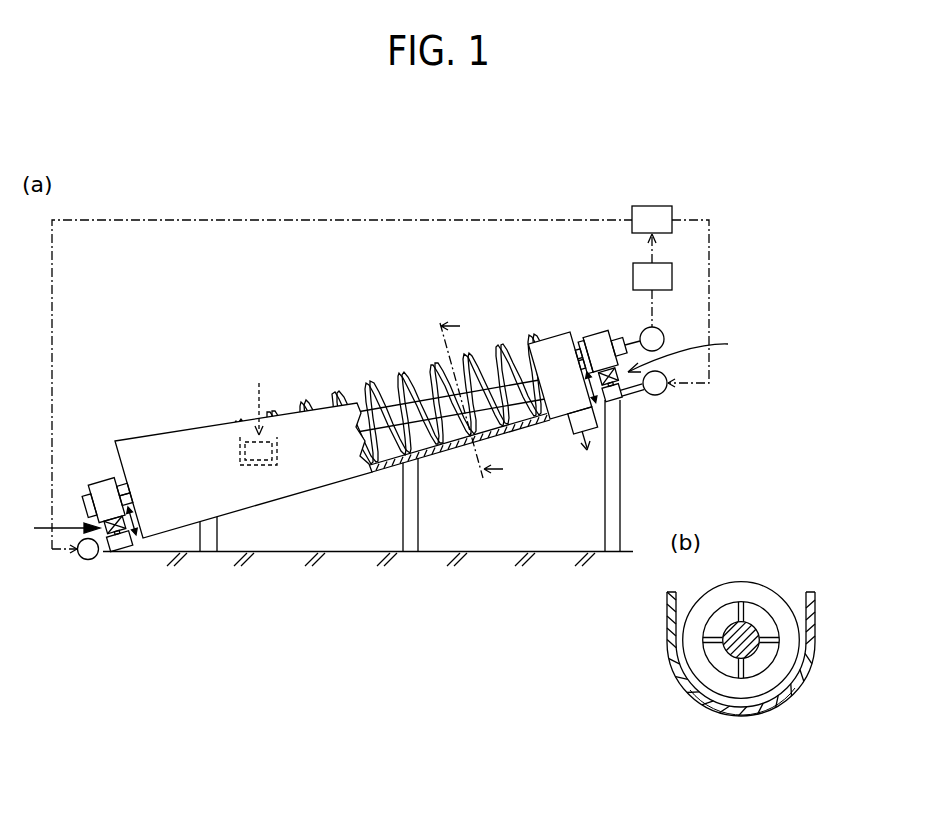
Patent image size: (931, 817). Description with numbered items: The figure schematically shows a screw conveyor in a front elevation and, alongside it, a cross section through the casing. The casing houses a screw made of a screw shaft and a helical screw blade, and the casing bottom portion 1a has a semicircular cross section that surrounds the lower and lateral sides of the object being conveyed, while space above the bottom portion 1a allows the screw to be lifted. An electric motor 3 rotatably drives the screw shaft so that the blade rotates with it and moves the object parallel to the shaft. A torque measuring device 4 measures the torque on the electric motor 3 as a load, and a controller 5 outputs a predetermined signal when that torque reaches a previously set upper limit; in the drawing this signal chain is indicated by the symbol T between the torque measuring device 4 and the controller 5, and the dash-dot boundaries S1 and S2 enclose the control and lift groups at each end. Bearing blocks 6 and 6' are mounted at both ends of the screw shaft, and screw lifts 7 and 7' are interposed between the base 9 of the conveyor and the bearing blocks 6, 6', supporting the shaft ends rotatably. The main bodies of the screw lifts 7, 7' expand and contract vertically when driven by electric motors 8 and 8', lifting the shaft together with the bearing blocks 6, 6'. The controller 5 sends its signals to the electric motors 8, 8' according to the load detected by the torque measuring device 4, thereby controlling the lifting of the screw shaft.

The bottom portion 1a is at (758, 700).
The electric motor 3 is at (666, 332).
The torque measuring device 4 is at (633, 278).
The controller 5 is at (651, 206).
The bearing block 6 is at (606, 346).
The bearing block 6' is at (109, 496).
The screw lift 7 is at (684, 352).
The screw lift 7' is at (58, 529).
The electric motor 8 is at (672, 398).
The electric motor 8' is at (71, 566).
The base 9 is at (630, 397).
The first system S1 is at (704, 303).
The second system S2 is at (342, 386).
The temperature signal T is at (662, 248).